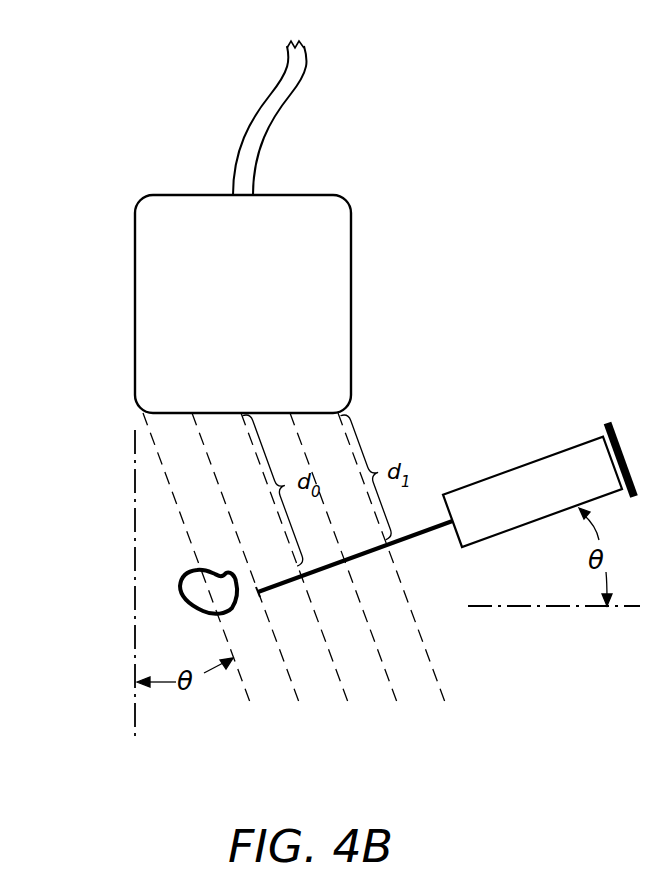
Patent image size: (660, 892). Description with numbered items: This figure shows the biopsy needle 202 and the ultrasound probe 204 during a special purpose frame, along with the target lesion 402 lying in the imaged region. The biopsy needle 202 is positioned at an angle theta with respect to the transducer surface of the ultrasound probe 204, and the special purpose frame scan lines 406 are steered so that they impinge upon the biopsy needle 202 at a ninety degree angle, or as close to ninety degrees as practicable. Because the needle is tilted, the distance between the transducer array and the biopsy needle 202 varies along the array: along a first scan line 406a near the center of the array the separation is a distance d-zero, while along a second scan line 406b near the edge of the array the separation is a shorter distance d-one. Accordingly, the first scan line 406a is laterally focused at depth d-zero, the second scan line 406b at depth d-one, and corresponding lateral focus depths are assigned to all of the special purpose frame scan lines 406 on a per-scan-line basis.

The ultrasound probe 204 is at (306, 195).
The biopsy needle 202 is at (523, 463).
The target lesion 402 is at (180, 588).
The special purpose frame scan lines 406 is at (472, 652).
The first scan line 406a is at (348, 702).
The second scan line 406b is at (445, 702).